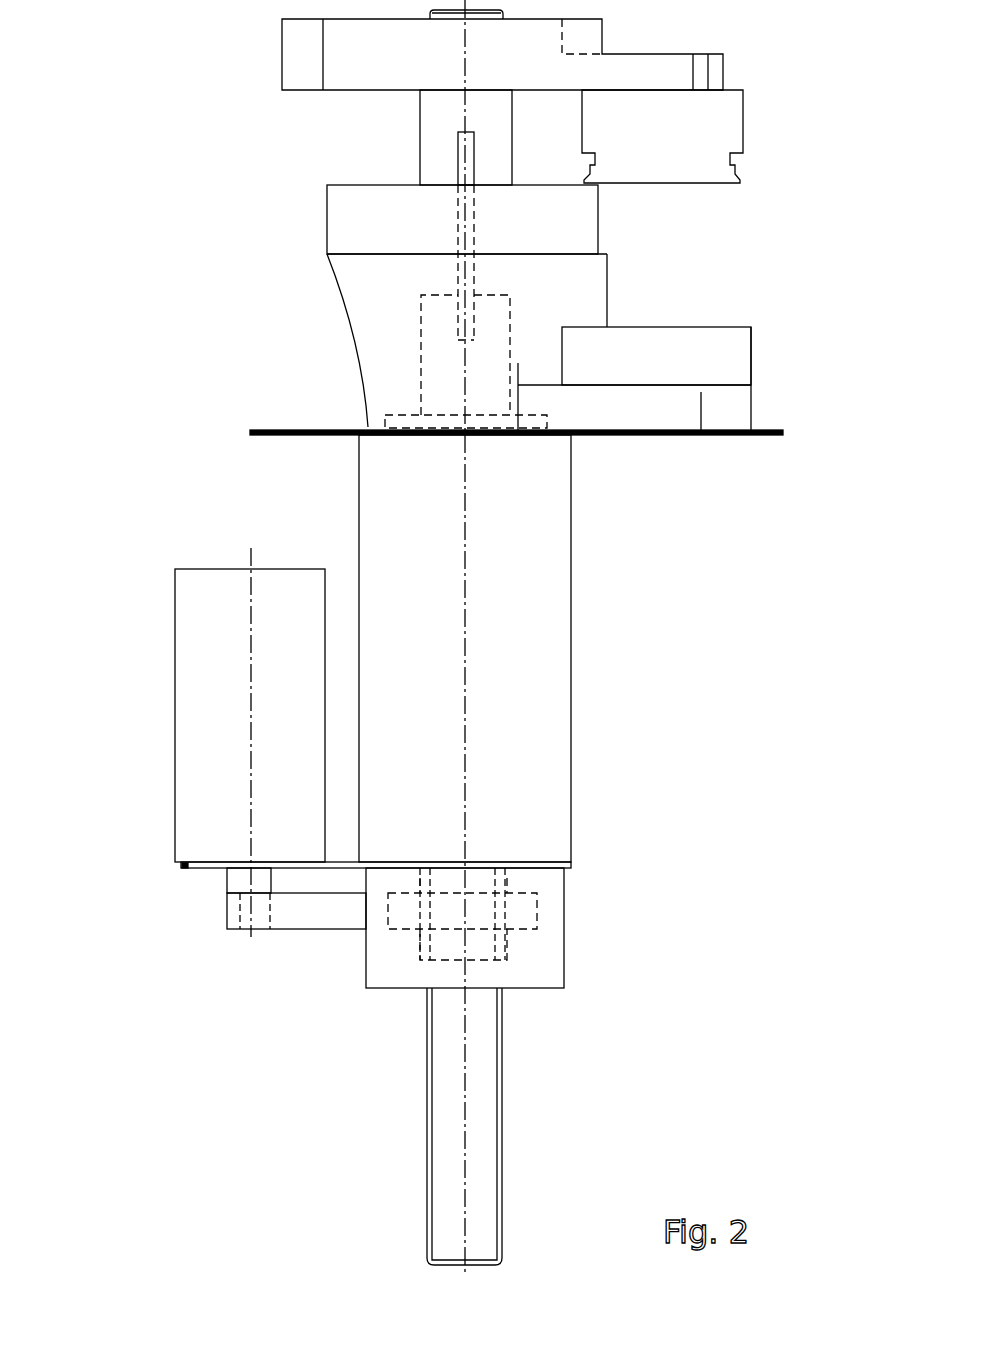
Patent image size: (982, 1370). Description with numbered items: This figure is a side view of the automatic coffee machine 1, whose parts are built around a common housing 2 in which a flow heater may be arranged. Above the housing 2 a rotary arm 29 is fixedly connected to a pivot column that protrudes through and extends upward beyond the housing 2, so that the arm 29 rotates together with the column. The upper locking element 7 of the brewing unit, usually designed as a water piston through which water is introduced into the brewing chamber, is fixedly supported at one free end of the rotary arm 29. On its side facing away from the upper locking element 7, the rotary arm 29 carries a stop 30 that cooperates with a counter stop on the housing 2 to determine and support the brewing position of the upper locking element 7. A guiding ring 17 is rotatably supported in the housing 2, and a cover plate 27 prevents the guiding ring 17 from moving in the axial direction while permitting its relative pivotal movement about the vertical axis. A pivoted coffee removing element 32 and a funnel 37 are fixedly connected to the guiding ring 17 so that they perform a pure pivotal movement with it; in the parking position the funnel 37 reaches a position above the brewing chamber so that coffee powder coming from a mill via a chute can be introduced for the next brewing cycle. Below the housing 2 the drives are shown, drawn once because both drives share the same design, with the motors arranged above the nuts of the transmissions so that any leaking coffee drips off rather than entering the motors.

The automatic coffee machine 1 is at (510, 648).
The common housing 2 is at (546, 588).
The upper locking element 7 is at (697, 137).
The guiding ring 17 is at (372, 421).
The cover plate 27 is at (297, 433).
The rotary arm 29 is at (678, 72).
The stop 30 is at (322, 95).
The pivoted coffee removing element 32 is at (723, 352).
The funnel 37 is at (362, 286).